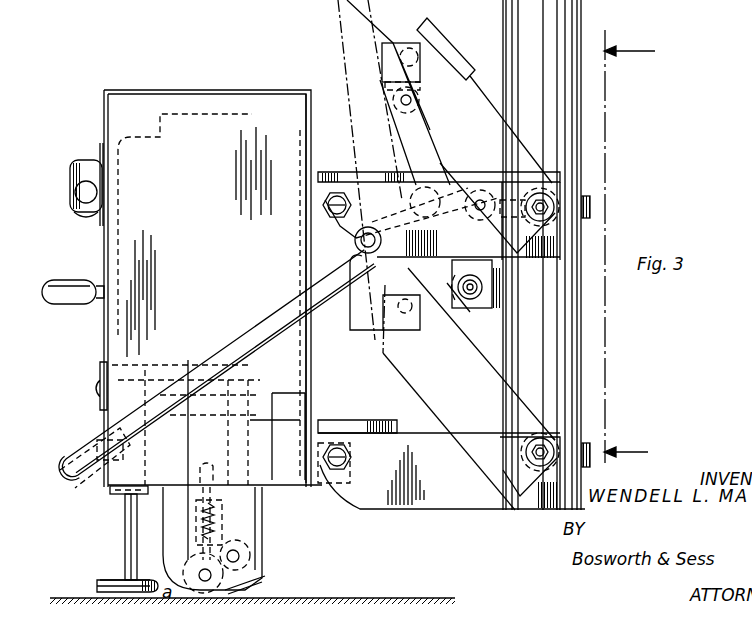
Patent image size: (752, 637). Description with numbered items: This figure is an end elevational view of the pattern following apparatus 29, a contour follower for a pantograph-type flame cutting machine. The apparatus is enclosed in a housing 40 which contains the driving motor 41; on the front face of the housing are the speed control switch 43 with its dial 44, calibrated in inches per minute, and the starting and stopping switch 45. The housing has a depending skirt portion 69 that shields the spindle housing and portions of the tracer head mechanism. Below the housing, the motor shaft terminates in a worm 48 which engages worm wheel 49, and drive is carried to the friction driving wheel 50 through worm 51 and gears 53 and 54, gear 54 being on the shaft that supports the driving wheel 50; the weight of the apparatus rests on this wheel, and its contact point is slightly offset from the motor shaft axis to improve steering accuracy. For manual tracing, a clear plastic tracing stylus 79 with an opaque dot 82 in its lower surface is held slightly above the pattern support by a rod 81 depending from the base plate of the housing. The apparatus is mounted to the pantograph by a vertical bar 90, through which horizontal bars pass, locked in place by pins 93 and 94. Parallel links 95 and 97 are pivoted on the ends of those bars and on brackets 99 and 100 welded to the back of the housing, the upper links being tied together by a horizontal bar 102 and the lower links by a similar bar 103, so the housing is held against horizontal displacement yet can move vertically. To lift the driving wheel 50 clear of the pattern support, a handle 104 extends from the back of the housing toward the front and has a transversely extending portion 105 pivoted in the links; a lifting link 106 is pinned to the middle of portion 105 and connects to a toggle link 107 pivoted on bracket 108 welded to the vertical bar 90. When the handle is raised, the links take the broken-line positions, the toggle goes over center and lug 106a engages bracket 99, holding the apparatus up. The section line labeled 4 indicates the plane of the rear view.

The pattern following apparatus 29 is at (170, 93).
The driving motor 41 is at (118, 170).
The dial 44 is at (103, 152).
The speed control switch 43 is at (86, 226).
The switch 45 is at (70, 304).
The transversely extending portion 105 is at (259, 322).
The handle 104 is at (85, 452).
The housing 40 is at (308, 393).
The bracket 99 is at (395, 43).
The lug 106a is at (413, 82).
The horizontal bar 102 is at (437, 23).
The link 95 is at (498, 130).
The lifting link 106 is at (437, 145).
The horizontal bar 103 is at (443, 300).
The toggle link 107 is at (484, 265).
The pin 93 is at (590, 208).
The bracket 108 is at (470, 308).
The bracket 100 is at (405, 328).
The link 97 is at (478, 386).
The pin 94 is at (590, 445).
The vertical bar 90 is at (563, 123).
The section line 4 is at (629, 255).
The skirt portion 69 is at (163, 465).
The rod 81 is at (126, 515).
The opaque dot 82 is at (115, 590).
The tracing stylus 79 is at (110, 580).
The worm wheel 49 is at (175, 528).
The friction driving wheel 50 is at (185, 573).
The worm 48 is at (262, 502).
The worm 51 is at (262, 520).
The gear 53 is at (265, 546).
The gear 54 is at (265, 565).